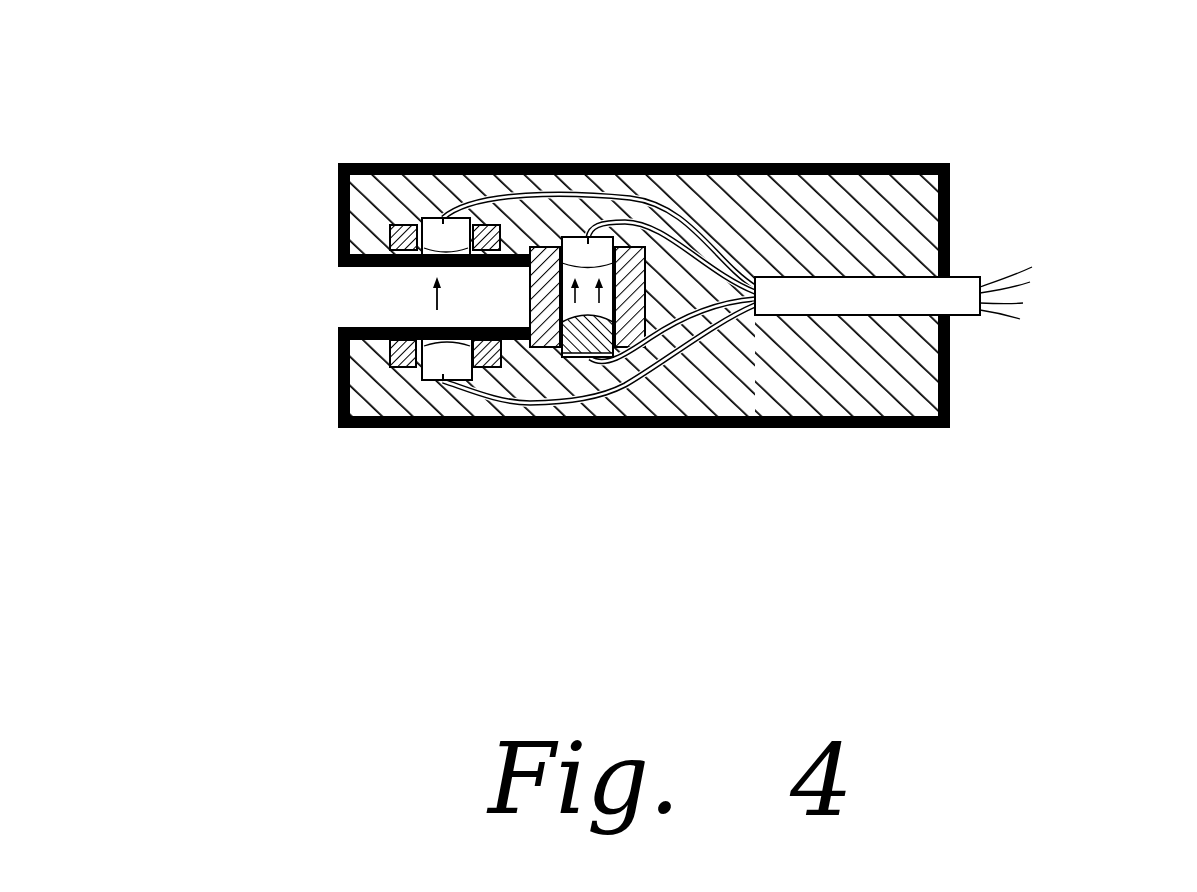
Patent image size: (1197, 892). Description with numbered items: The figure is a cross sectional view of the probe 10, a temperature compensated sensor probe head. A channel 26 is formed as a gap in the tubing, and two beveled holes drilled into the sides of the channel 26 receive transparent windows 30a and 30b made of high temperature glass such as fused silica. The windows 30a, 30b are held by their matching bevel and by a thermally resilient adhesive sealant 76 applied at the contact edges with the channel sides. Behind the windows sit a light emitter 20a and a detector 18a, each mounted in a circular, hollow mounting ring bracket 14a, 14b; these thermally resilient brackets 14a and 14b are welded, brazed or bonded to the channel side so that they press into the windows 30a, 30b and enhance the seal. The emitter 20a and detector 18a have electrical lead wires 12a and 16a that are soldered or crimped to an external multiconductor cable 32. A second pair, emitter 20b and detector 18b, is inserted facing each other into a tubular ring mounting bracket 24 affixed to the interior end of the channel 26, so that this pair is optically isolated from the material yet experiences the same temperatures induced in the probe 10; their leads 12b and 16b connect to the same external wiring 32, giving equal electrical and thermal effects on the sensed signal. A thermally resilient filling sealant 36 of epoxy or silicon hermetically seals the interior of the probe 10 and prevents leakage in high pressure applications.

The probe 10 is at (837, 428).
The electrical lead wires 12a is at (547, 403).
The leads 12b is at (665, 376).
The mounting ring bracket 14a is at (363, 165).
The mounting ring bracket 14b is at (353, 423).
The electrical lead wires 16a is at (723, 258).
The leads 16b is at (662, 215).
The detector 18a is at (441, 216).
The detector 18b is at (590, 237).
The light emitter 20a is at (440, 381).
The emitter 20b is at (592, 358).
The tubular ring mounting bracket 24 is at (541, 247).
The channel 26 is at (360, 292).
The transparent window 30a is at (390, 232).
The transparent window 30b is at (392, 349).
The multiconductor cable 32 is at (958, 285).
The filling sealant 36 is at (950, 413).
The adhesive sealant 76 is at (478, 336).